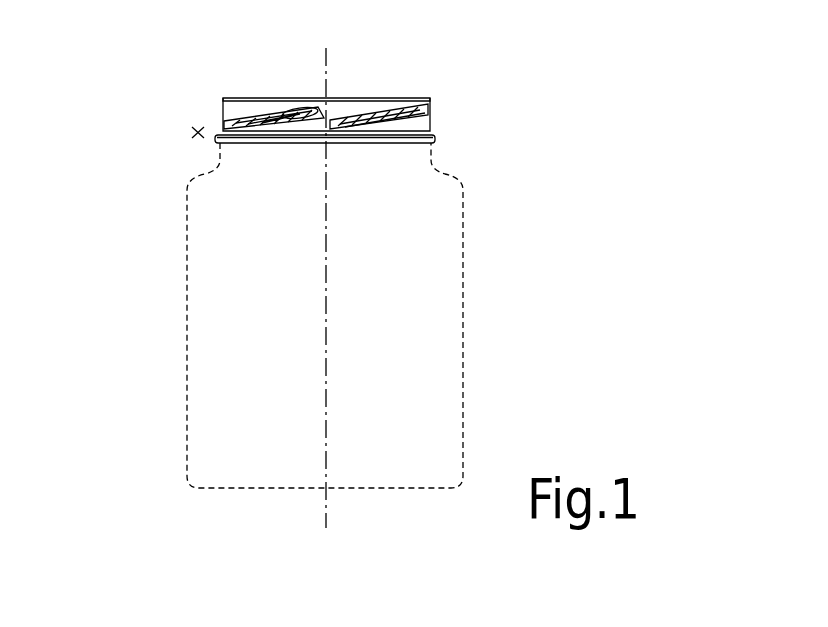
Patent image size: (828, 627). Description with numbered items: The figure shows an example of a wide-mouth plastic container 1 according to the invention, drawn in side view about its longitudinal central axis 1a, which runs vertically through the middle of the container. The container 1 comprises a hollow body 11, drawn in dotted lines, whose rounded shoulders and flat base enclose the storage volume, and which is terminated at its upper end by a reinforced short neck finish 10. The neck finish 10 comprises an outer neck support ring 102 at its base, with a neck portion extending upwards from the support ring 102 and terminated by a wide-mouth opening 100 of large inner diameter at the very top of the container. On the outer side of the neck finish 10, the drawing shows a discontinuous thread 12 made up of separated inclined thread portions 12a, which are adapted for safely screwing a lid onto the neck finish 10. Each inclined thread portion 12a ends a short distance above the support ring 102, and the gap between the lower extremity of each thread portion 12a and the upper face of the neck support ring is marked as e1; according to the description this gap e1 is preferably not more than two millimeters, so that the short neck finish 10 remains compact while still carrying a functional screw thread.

The wide-mouth plastic container 1 is at (341, 264).
The longitudinal central axis 1a is at (327, 68).
The reinforced short neck finish 10 is at (326, 101).
The hollow body 11 is at (224, 363).
The discontinuous thread 12 is at (361, 73).
The inclined thread portions 12a is at (243, 130).
The wide-mouth opening 100 is at (390, 97).
The outer neck support ring 102 is at (434, 141).
The gap e1 is at (225, 131).